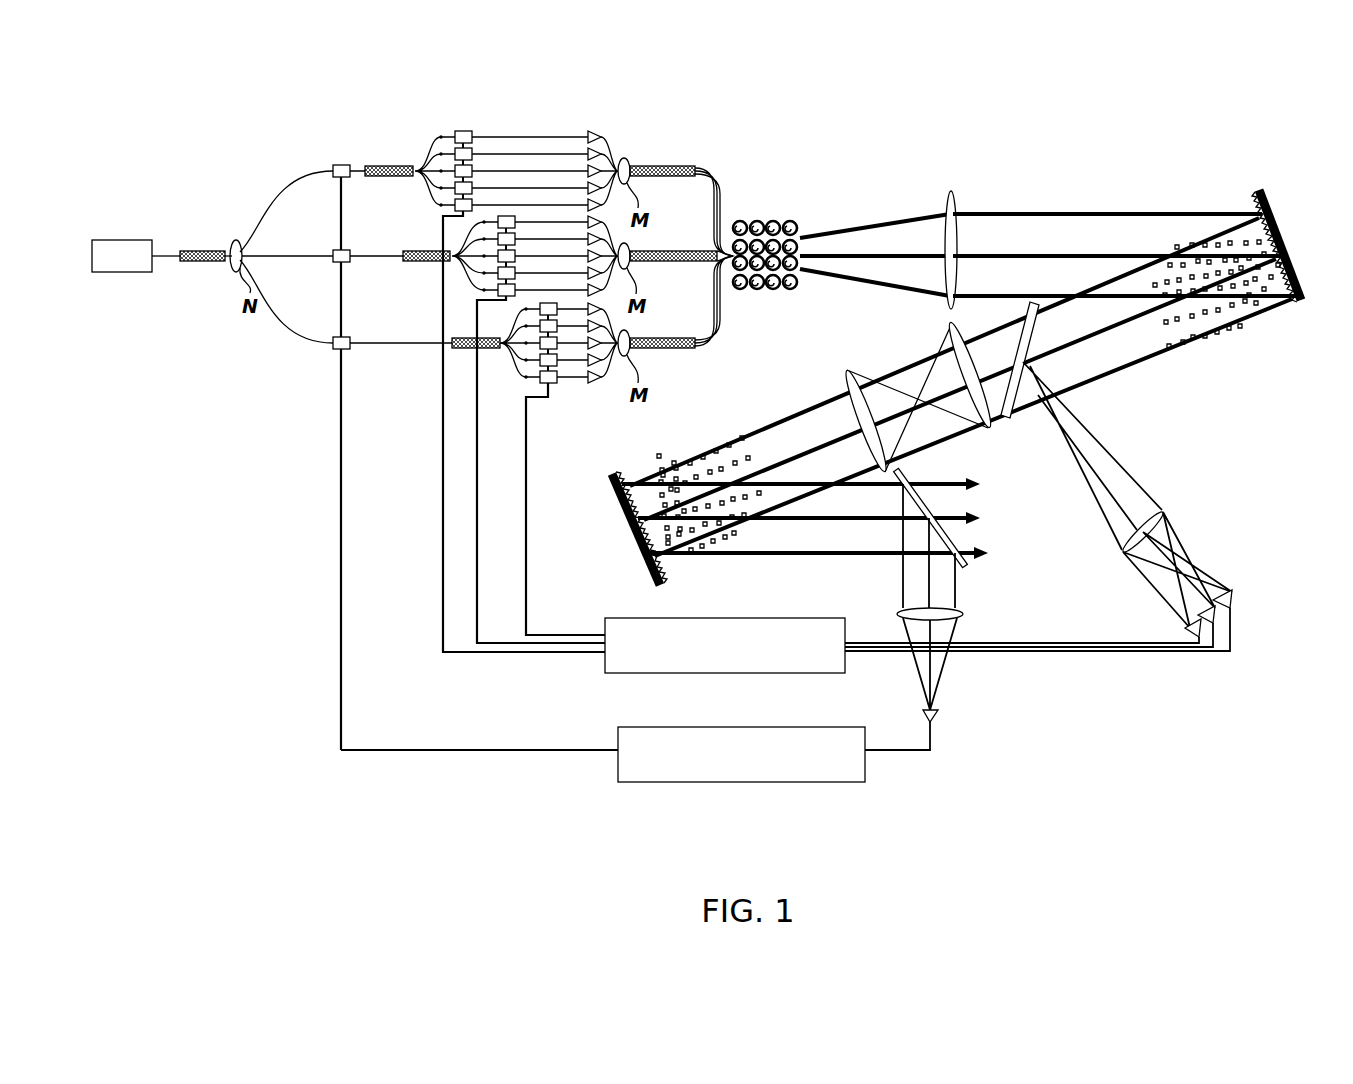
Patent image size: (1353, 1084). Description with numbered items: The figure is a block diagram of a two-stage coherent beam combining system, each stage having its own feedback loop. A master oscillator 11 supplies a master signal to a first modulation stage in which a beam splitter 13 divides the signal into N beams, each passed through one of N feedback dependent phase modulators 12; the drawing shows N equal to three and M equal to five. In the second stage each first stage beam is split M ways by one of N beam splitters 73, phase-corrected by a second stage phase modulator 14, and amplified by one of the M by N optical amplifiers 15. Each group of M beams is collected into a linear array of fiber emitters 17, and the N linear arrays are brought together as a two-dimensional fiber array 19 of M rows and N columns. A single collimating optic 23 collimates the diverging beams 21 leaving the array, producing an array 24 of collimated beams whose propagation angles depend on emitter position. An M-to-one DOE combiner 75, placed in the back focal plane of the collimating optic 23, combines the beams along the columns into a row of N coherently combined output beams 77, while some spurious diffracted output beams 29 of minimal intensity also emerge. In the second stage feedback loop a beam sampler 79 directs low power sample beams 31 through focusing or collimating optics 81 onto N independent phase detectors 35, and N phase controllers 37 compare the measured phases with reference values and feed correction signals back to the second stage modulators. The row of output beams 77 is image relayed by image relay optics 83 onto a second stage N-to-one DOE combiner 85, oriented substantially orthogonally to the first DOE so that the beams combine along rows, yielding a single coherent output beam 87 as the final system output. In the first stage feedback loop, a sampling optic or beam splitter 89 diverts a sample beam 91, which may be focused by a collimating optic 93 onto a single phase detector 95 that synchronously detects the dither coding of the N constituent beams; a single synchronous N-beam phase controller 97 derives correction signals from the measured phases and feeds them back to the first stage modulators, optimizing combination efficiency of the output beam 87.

The master oscillator 11 is at (118, 240).
The first stage phase modulators 12 is at (328, 152).
The beam splitter 13 is at (205, 250).
The second stage phase modulators 14 is at (492, 212).
The optical amplifiers 15 is at (577, 122).
The fiber emitters 17 is at (715, 162).
The two-dimensional fiber array 19 is at (732, 212).
The diverging beams 21 is at (858, 211).
The collimating optic 23 is at (952, 192).
The array of collimated beams 24 is at (1093, 197).
The spurious diffracted output beams 29 is at (1225, 243).
The sample beams 31 is at (1121, 455).
The phase detectors 35 is at (1245, 582).
The phase controllers 37 is at (603, 657).
The beam splitters 73 is at (374, 177).
The M:1 DOE combiner 75 is at (1257, 188).
The coherently combined output beams 77 is at (1149, 373).
The beam sampler 79 is at (1010, 418).
The focusing or collimating optics 81 is at (1163, 512).
The image relay optics 83 is at (894, 349).
The second stage N:1 DOE combiner 85 is at (612, 500).
The coherent output beam 87 is at (781, 575).
The sampling optic or beam splitter 89 is at (960, 536).
The sample beam 91 is at (887, 585).
The collimating optic 93 is at (963, 614).
The phase detector 95 is at (938, 717).
The single synchronous N-beam phase controller 97 is at (618, 768).